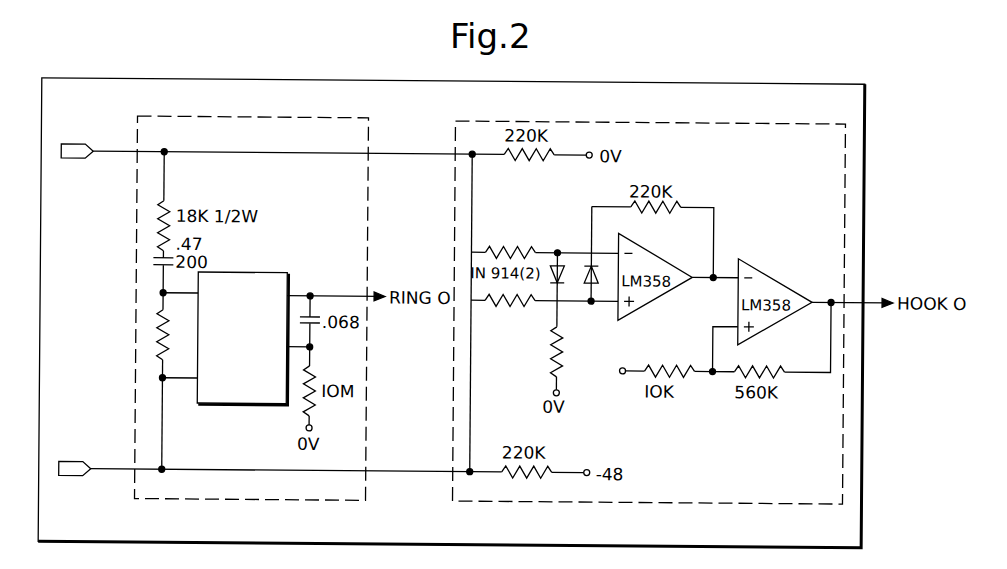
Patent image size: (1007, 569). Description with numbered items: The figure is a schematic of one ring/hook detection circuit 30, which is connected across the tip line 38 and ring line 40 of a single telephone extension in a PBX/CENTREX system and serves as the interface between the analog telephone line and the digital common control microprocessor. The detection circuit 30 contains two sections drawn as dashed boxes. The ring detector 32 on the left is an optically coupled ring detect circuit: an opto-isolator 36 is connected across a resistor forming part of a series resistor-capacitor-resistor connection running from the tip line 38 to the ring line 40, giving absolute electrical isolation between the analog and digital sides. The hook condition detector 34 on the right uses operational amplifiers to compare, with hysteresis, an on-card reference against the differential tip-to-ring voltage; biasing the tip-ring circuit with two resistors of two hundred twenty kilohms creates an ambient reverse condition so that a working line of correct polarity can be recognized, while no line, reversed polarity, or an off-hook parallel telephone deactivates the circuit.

The detection circuit 30 is at (736, 84).
The ring detector 32 is at (318, 121).
The hook condition detector 34 is at (732, 122).
The MID-400 opto-isolator 36 is at (268, 275).
The tip line 38 is at (90, 474).
The ring line 40 is at (90, 156).